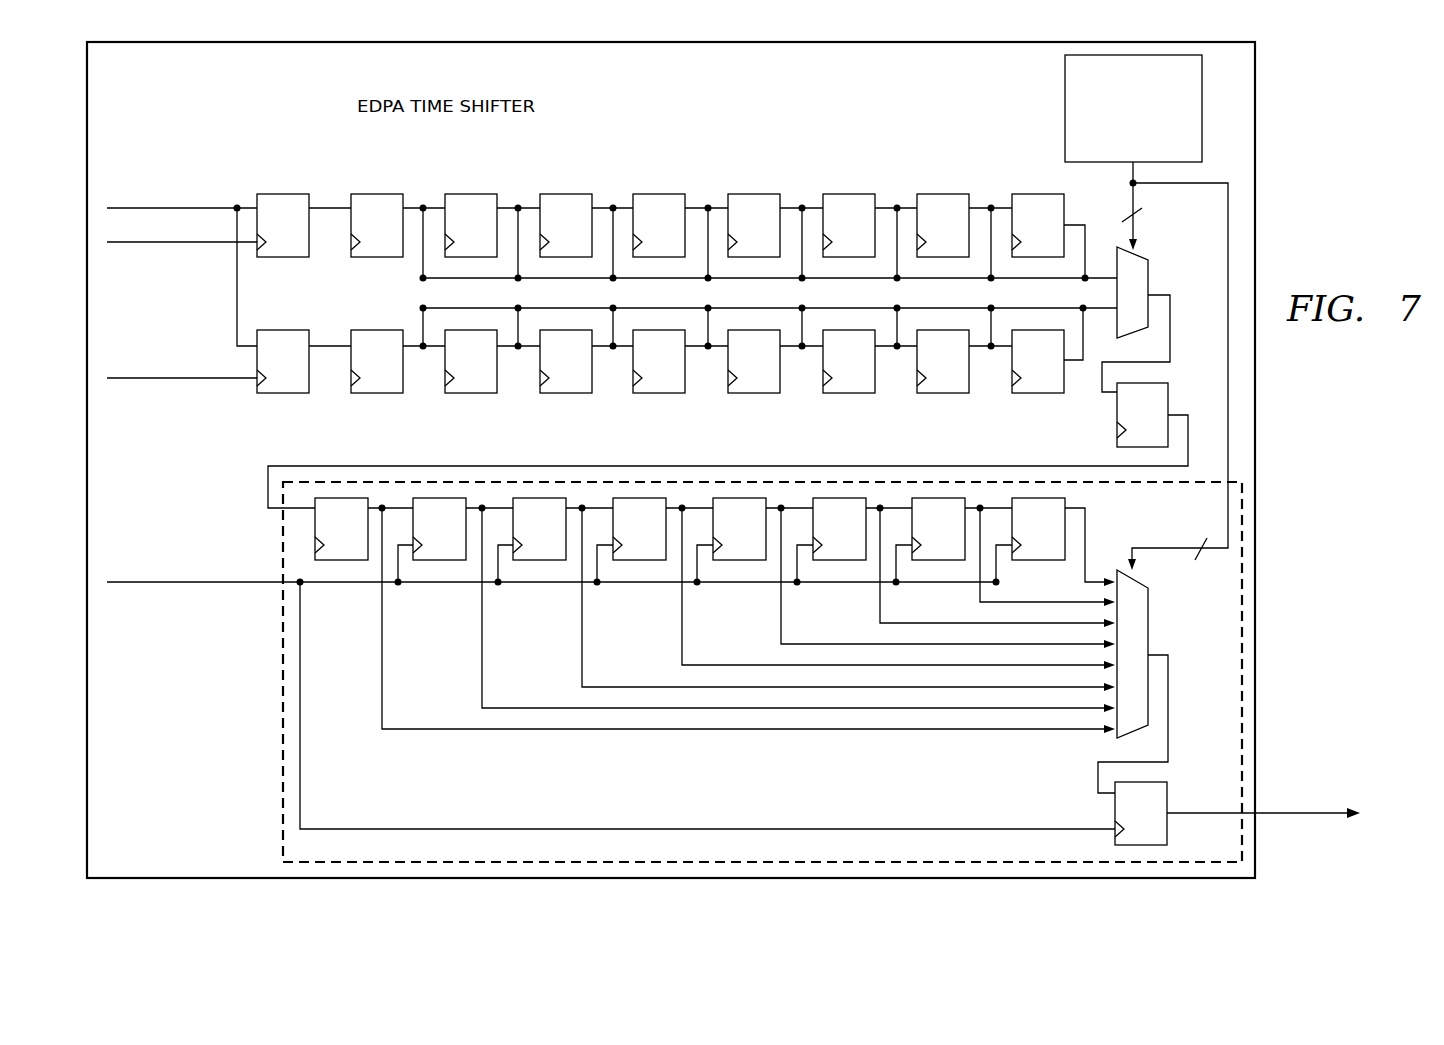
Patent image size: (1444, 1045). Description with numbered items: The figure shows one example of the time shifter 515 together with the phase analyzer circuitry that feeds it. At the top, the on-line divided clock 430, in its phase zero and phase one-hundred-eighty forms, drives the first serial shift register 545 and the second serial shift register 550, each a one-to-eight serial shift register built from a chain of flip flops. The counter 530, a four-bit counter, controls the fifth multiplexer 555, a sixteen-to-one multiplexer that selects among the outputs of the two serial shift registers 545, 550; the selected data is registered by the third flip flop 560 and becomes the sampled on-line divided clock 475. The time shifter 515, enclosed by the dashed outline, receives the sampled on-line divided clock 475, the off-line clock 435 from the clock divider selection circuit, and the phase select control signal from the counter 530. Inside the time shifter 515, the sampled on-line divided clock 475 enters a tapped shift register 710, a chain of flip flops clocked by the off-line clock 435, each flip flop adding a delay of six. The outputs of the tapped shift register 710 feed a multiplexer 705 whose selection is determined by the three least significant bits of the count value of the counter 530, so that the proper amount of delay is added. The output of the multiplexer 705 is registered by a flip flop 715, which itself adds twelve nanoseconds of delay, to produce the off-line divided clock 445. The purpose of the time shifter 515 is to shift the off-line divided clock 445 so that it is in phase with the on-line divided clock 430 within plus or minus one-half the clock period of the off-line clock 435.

The on-line divided clock 430 is at (166, 126).
The off-line clock 435 is at (170, 525).
The off-line divided clock 445 is at (1314, 727).
The sampled on-line divided clock 475 is at (293, 465).
The time shifter 515 is at (283, 740).
The counter 530 is at (1065, 108).
The first serial shift register 545 is at (703, 152).
The second serial shift register 550 is at (518, 418).
The fifth multiplexer 555 is at (1150, 281).
The third flip flop 560 is at (1117, 418).
The multiplexer 705 is at (1150, 626).
The tapped shift register 710 is at (1065, 531).
The flip flop 715 is at (1115, 812).